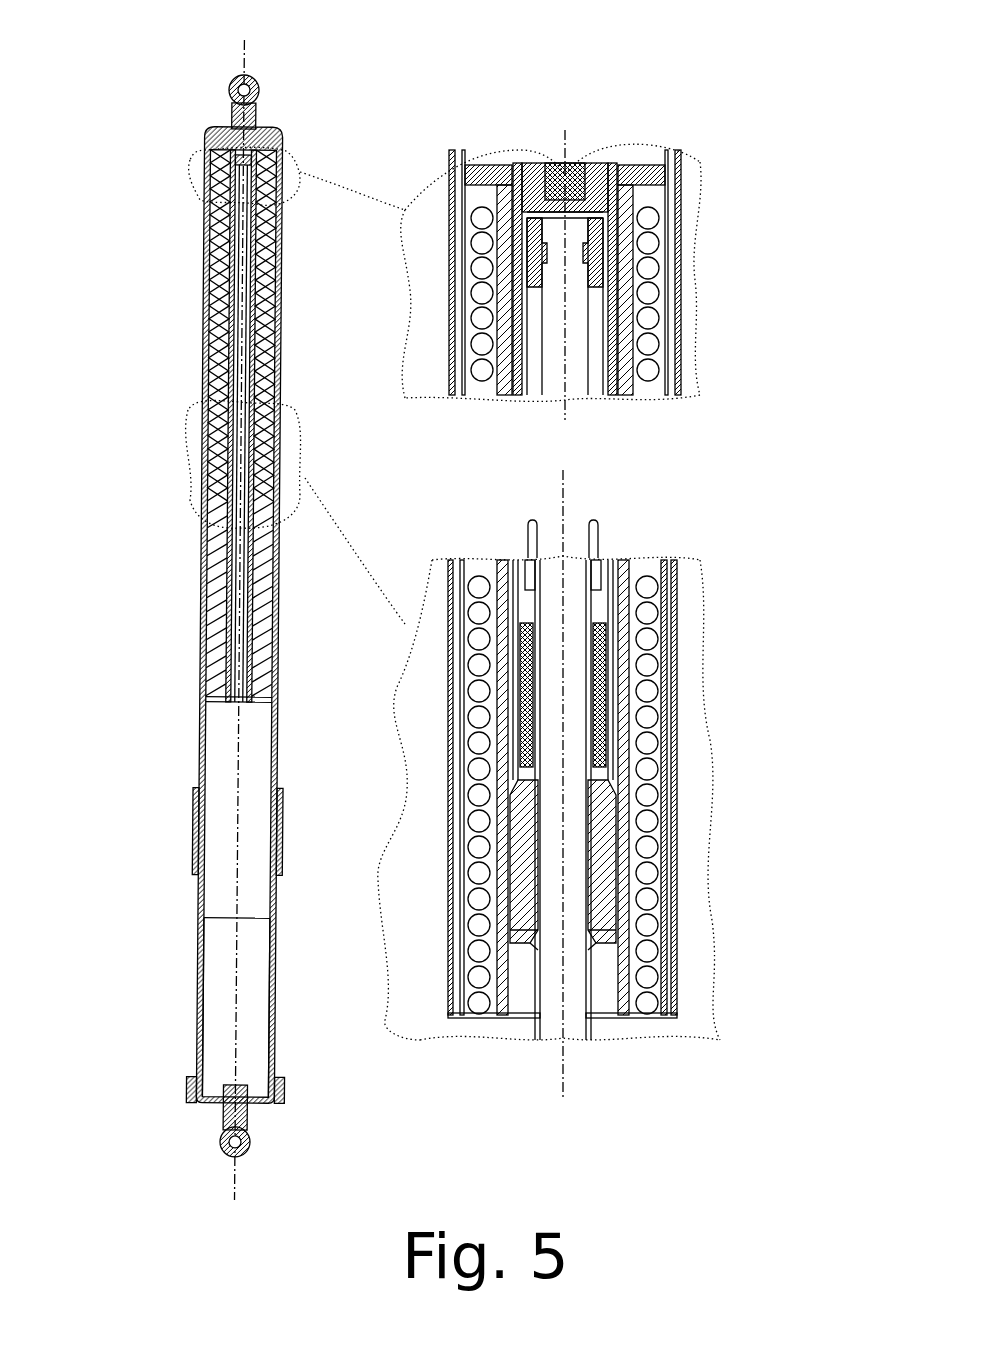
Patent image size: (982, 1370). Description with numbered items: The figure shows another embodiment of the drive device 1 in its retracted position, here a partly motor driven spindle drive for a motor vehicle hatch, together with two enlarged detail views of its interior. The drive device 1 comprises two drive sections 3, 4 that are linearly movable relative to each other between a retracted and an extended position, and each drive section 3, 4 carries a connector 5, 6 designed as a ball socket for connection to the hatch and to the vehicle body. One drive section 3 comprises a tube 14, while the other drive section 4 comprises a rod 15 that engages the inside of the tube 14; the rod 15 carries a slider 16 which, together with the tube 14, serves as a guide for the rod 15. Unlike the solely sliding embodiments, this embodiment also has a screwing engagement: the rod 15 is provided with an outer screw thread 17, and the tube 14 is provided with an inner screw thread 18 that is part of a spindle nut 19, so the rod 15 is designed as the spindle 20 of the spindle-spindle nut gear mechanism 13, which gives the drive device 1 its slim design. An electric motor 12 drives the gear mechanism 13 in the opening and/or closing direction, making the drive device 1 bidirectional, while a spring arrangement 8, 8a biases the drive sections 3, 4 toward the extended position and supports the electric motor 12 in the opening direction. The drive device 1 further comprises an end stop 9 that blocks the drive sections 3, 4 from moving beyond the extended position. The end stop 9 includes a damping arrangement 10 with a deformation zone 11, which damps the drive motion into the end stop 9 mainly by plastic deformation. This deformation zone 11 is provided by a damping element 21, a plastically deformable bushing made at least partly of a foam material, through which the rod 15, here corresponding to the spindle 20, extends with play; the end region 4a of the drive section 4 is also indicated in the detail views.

The drive device 1 is at (143, 120).
The drive section 3 is at (198, 271).
The drive section 4 is at (282, 1004).
The end section of outer tube 4a is at (283, 176).
The connector 5 is at (260, 95).
The connector 6 is at (255, 1138).
The spring arrangement 8 is at (665, 632).
The outer wall section 8a is at (714, 789).
The end stop 9 is at (206, 436).
The damping arrangement 10 is at (660, 722).
The deformation zone 11 is at (683, 670).
The electric motor 12 is at (210, 993).
The gear mechanism 13 is at (152, 530).
The tube 14 is at (206, 328).
The rod 15 is at (757, 333).
The slider 16 is at (612, 330).
The outer screw thread 17 is at (605, 1040).
The inner screw thread 18 is at (665, 910).
The spindle nut 19 is at (665, 812).
The spindle 20 is at (502, 560).
The damping element 21 is at (710, 639).